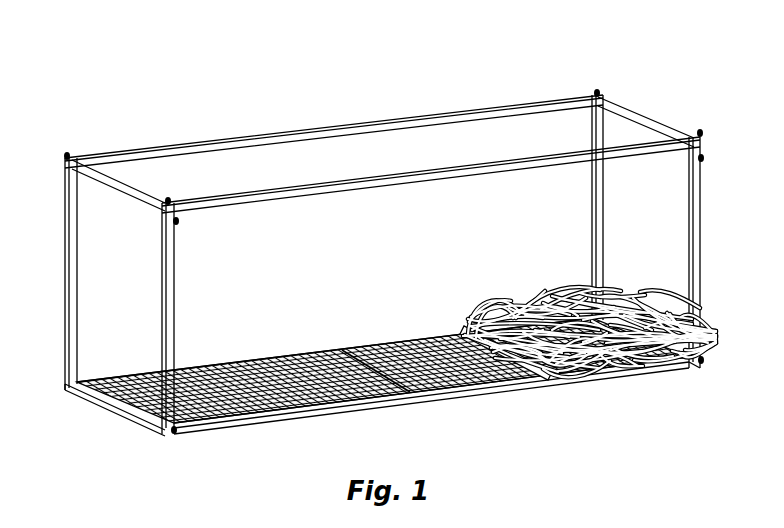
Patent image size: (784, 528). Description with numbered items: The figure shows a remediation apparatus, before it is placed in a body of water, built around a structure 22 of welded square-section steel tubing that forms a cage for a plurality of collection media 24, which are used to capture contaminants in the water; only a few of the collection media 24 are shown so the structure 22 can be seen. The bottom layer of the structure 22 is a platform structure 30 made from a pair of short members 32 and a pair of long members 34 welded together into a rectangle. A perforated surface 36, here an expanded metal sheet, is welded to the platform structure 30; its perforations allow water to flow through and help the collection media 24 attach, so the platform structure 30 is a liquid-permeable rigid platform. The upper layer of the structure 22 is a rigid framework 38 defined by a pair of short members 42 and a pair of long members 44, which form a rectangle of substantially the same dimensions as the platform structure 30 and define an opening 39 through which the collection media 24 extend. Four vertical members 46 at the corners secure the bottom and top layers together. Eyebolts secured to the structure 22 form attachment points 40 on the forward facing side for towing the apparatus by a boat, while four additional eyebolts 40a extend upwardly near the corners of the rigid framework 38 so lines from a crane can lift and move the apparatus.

The structure 22 is at (382, 138).
The collection media 24 is at (625, 383).
The platform structure 30 is at (382, 393).
The short members 32 is at (105, 410).
The long members 34 is at (584, 392).
The perforated surface 36 is at (230, 413).
The rigid framework 38 is at (503, 104).
The opening 39 is at (433, 147).
The attachment points 40 is at (179, 221).
The eyebolts 40a is at (67, 153).
The short members 42 is at (105, 197).
The long members 44 is at (248, 147).
The vertical members 46 is at (65, 273).